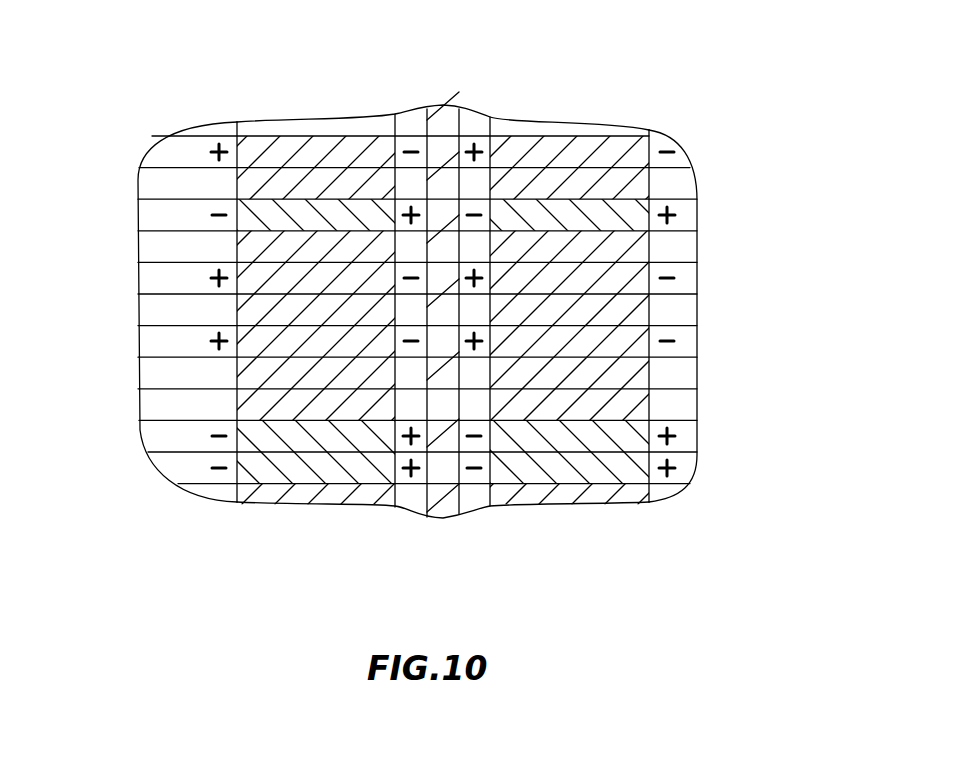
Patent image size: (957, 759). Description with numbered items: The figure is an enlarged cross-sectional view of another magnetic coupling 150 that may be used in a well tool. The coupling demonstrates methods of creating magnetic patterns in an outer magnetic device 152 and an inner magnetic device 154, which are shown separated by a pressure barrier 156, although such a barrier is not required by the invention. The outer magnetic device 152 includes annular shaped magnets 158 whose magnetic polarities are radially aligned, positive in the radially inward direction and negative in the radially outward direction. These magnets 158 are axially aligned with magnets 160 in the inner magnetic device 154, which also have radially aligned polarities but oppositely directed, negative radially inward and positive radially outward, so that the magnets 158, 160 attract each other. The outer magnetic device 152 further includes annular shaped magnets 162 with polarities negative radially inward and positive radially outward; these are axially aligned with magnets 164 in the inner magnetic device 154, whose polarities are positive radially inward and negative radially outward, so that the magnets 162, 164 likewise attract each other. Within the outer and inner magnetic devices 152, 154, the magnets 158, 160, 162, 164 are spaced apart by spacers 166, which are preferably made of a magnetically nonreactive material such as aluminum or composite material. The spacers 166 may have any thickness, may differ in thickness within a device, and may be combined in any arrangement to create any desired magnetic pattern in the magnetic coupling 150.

The magnetic coupling 150 is at (720, 86).
The outer magnetic device 152 is at (588, 508).
The inner magnetic device 154 is at (315, 507).
The pressure barrier 156 is at (447, 518).
The magnets 158 is at (655, 165).
The magnets 160 is at (232, 146).
The magnets 162 is at (692, 216).
The magnets 164 is at (232, 209).
The spacers 166 is at (232, 178).